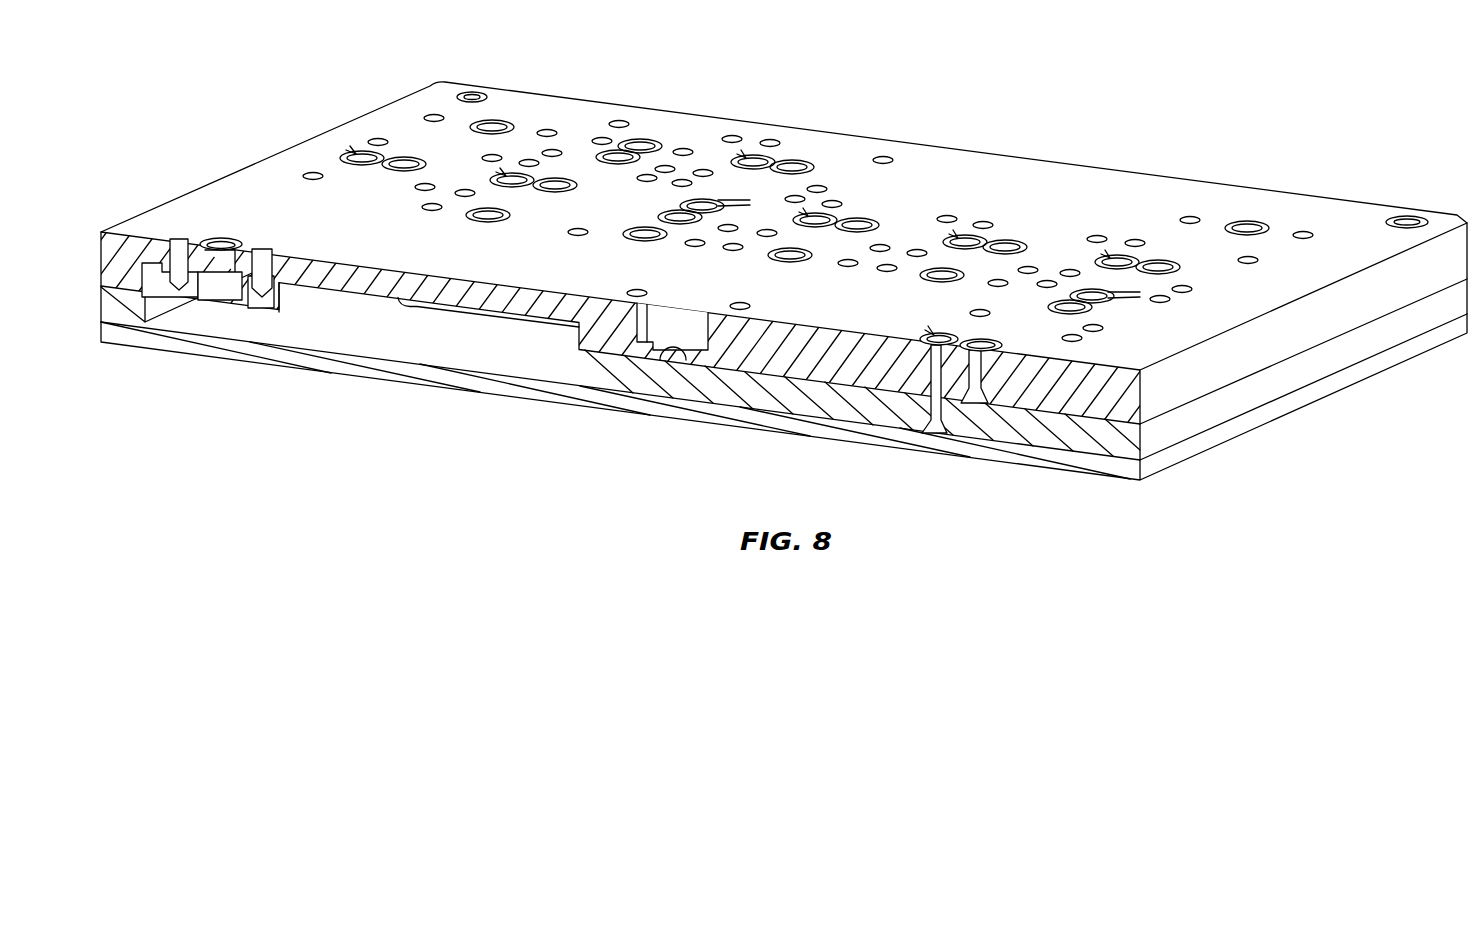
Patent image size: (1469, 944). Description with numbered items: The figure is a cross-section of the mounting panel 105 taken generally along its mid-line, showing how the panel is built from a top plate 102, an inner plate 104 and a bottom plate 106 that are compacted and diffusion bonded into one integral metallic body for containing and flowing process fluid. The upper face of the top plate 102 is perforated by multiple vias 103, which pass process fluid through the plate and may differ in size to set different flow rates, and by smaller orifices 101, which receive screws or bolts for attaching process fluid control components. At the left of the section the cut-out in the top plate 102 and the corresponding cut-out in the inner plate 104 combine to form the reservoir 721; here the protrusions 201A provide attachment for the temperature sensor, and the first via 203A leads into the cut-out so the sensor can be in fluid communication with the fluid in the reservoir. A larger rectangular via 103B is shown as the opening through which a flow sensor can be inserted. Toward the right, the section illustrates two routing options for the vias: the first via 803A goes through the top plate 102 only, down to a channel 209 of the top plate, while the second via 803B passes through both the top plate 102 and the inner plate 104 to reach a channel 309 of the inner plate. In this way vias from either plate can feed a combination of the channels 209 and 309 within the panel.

The mounting panel 105 is at (226, 92).
The top plate 102 is at (560, 95).
The orifices 101 is at (883, 159).
The vias 103 is at (1037, 240).
The first via 203A is at (216, 240).
The protrusions 201A is at (250, 305).
The reservoir 721 is at (371, 320).
The rectangular via 103B is at (677, 326).
The second via 803B is at (919, 333).
The channel of the inner plate 309 is at (927, 435).
The channels 209 is at (981, 405).
The first via 803A is at (1006, 350).
The inner plate 104 is at (1205, 415).
The bottom plate 106 is at (1270, 343).